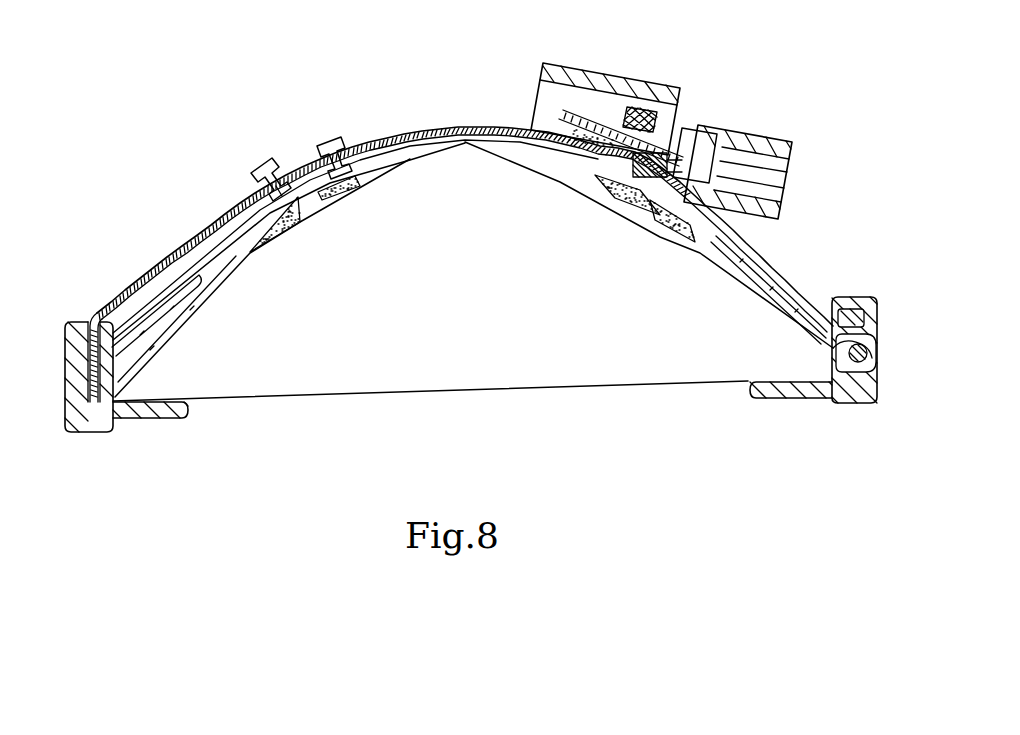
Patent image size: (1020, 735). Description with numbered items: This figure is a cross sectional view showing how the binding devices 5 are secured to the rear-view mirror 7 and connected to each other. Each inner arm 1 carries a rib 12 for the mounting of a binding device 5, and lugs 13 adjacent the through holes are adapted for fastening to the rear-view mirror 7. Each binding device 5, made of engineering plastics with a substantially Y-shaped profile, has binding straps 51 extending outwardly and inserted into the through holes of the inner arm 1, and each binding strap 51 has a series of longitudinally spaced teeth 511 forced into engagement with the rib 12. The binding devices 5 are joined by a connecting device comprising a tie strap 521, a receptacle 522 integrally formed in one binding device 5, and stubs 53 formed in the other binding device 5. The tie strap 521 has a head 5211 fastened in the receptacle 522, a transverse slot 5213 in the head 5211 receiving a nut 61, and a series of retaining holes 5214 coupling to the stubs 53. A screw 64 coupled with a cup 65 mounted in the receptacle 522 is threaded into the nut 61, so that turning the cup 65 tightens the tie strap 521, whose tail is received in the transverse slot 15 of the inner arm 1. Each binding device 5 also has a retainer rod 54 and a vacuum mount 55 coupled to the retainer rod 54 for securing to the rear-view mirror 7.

The inner arm 1 is at (65, 340).
The rib 12 is at (866, 348).
The lug 13 is at (155, 418).
The transverse slot 15 is at (92, 320).
The binding device 5 is at (238, 237).
The binding strap 51 is at (197, 292).
The teeth 511 is at (167, 327).
The tie strap 521 is at (190, 233).
The receptacle 522 is at (577, 77).
The head 5211 is at (640, 113).
The transverse slot 5213 is at (647, 110).
The nut 61 is at (732, 105).
The retaining hole 5214 is at (287, 177).
The stub 53 is at (270, 173).
The retainer rod 54 is at (307, 197).
The vacuum mount 55 is at (350, 187).
The screw 64 is at (700, 158).
The cup 65 is at (767, 143).
The rear-view mirror 7 is at (360, 393).